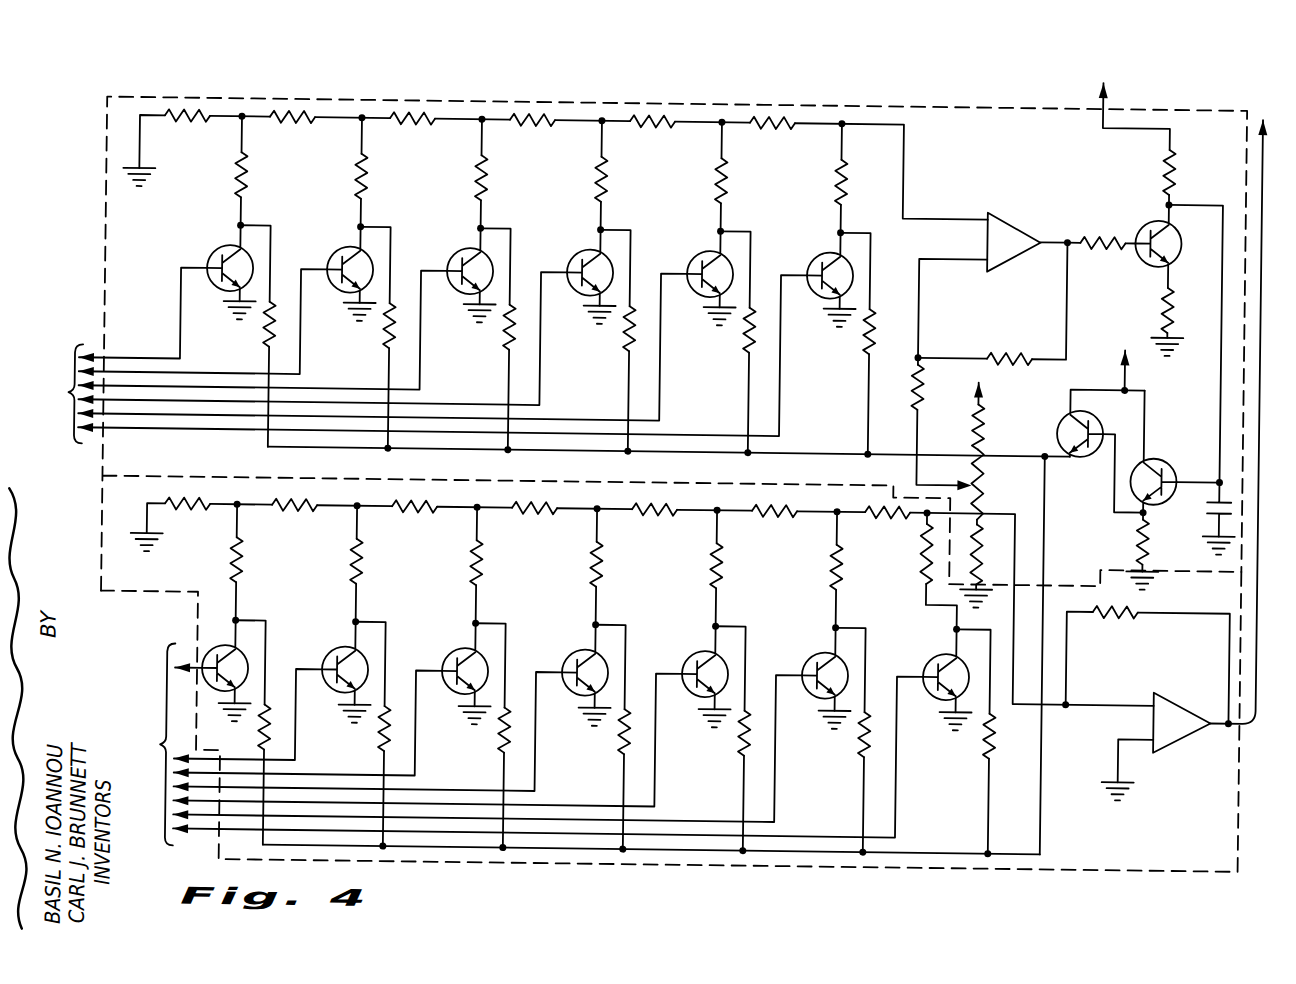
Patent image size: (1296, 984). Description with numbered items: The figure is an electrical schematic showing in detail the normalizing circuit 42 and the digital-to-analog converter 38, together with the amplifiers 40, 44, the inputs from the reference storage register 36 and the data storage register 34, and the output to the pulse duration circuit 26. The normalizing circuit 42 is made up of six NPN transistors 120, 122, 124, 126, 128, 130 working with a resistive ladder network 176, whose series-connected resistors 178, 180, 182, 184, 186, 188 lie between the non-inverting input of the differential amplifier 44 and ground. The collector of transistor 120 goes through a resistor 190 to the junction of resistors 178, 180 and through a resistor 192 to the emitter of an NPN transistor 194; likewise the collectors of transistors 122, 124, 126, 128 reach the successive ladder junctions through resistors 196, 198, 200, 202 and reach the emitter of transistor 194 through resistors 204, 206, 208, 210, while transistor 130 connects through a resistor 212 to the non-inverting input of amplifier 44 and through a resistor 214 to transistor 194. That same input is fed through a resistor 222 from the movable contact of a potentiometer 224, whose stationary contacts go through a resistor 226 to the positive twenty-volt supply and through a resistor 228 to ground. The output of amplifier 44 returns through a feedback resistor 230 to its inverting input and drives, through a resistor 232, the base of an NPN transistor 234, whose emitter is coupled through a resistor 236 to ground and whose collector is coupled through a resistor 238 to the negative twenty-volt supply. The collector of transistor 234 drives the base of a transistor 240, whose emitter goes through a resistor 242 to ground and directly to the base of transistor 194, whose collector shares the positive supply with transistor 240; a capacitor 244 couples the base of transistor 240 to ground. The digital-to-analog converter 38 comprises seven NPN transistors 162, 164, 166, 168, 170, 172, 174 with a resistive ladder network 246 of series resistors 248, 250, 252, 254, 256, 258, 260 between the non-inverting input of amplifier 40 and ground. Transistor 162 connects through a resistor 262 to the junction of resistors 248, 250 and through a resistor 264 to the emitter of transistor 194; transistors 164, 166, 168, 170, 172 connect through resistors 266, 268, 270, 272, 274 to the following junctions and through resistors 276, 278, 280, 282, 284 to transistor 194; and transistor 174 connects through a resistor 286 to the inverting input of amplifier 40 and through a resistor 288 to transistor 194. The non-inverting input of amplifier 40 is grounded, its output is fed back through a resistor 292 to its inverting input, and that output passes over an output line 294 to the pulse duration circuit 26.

The pulse duration circuit 26 is at (1215, 79).
The data storage register 34 is at (114, 743).
The reference storage register 36 is at (41, 401).
The digital-to-analog converter 38 is at (676, 866).
The differential amplifier 40 is at (1160, 714).
The normalizing circuit 42 is at (312, 88).
The differential amplifier 44 is at (986, 262).
The NPN transistor 120 is at (220, 248).
The NPN transistor 122 is at (352, 249).
The NPN transistor 124 is at (472, 248).
The NPN transistor 126 is at (593, 248).
The NPN transistor 128 is at (712, 247).
The NPN transistor 130 is at (833, 245).
The NPN transistor 162 is at (216, 648).
The NPN transistor 164 is at (344, 650).
The NPN transistor 166 is at (469, 649).
The NPN transistor 168 is at (589, 653).
The NPN transistor 170 is at (714, 652).
The NPN transistor 172 is at (834, 652).
The NPN transistor 174 is at (952, 652).
The resistive ladder network 176 is at (592, 104).
The resistor 178 is at (186, 110).
The resistor 180 is at (289, 121).
The resistor 182 is at (411, 120).
The resistor 184 is at (535, 118).
The resistor 186 is at (651, 117).
The resistor 188 is at (758, 115).
The resistor 190 is at (250, 178).
The resistor 192 is at (266, 325).
The NPN transistor 194 is at (1066, 410).
The resistor 196 is at (372, 177).
The resistor 198 is at (492, 175).
The resistor 200 is at (617, 174).
The resistor 202 is at (730, 173).
The resistor 204 is at (388, 332).
The resistor 206 is at (508, 332).
The resistor 208 is at (630, 331).
The resistor 210 is at (751, 331).
The resistor 212 is at (850, 174).
The resistor 214 is at (875, 330).
The resistor 222 is at (924, 388).
The potentiometer 224 is at (1006, 484).
The resistor 226 is at (980, 406).
The resistor 228 is at (994, 562).
The feedback resistor 230 is at (990, 345).
The resistor 232 is at (1090, 230).
The NPN transistor 234 is at (1170, 248).
The resistor 236 is at (1170, 297).
The resistor 238 is at (1176, 152).
The transistor 240 is at (1200, 446).
The resistor 242 is at (1144, 540).
The capacitor 244 is at (1213, 506).
The resistive ladder network 246 is at (575, 490).
The resistor 248 is at (172, 505).
The resistor 250 is at (294, 503).
The resistor 252 is at (420, 502).
The resistor 254 is at (542, 505).
The resistor 256 is at (660, 504).
The resistor 258 is at (774, 502).
The resistor 260 is at (868, 508).
The resistor 262 is at (250, 559).
The resistor 264 is at (281, 728).
The resistor 266 is at (370, 558).
The resistor 268 is at (492, 556).
The resistor 270 is at (615, 555).
The resistor 272 is at (737, 555).
The resistor 274 is at (847, 570).
The resistor 276 is at (403, 727).
The resistor 278 is at (523, 729).
The resistor 280 is at (643, 730).
The resistor 282 is at (761, 731).
The resistor 284 is at (888, 733).
The resistor 286 is at (926, 556).
The resistor 288 is at (994, 748).
The resistor 292 is at (1102, 606).
The output line 294 is at (1260, 713).